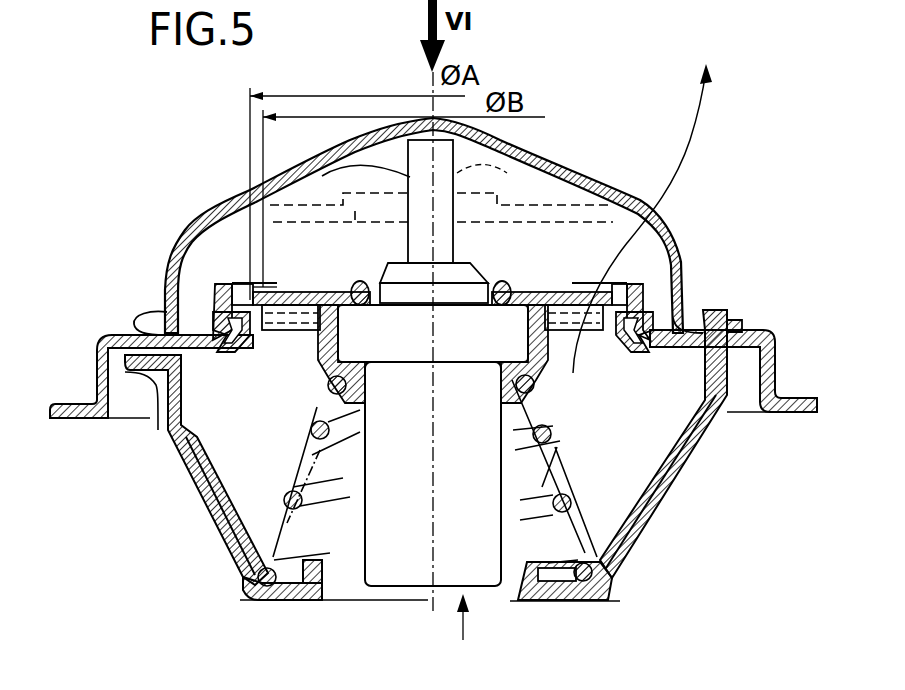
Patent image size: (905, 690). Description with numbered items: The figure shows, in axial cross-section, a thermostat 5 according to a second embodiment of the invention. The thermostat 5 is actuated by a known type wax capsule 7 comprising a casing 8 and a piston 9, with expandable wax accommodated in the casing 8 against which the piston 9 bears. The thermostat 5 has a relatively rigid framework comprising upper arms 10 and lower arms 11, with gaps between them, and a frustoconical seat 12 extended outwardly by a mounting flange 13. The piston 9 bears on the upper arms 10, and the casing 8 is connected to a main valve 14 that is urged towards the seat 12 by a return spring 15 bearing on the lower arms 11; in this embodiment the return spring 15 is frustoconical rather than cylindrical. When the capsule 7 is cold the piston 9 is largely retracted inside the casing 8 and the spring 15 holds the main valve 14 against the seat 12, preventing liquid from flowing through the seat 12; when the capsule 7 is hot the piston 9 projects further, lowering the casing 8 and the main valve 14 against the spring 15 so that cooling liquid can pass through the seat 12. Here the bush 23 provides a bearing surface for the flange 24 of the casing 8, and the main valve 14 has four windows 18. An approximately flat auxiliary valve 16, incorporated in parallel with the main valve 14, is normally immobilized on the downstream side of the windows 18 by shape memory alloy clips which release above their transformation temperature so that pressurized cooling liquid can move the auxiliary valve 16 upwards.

The thermostat 5 is at (706, 226).
The wax capsule 7 is at (464, 635).
The casing 8 is at (416, 500).
The piston 9 is at (447, 157).
The upper arms 10 is at (594, 186).
The lower arms 11 is at (668, 470).
The frustoconical seat 12 is at (165, 298).
The mounting flange 13 is at (66, 414).
The main valve 14 is at (642, 347).
The return spring 15 is at (287, 497).
The auxiliary valve 16 is at (293, 223).
The windows 18 is at (283, 327).
The bush 23 is at (322, 354).
The flange 24 is at (428, 350).